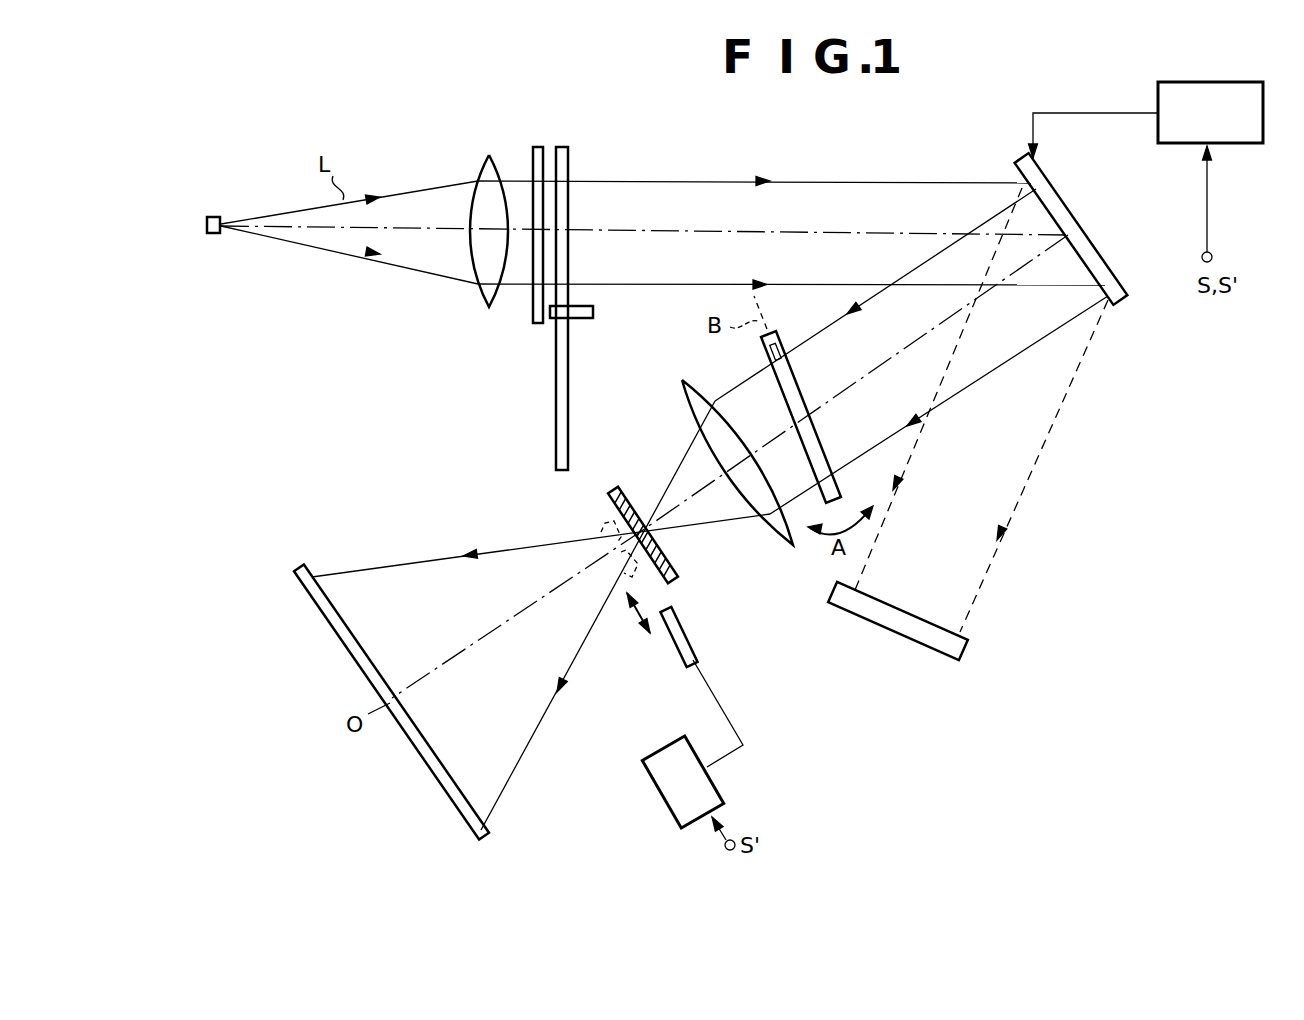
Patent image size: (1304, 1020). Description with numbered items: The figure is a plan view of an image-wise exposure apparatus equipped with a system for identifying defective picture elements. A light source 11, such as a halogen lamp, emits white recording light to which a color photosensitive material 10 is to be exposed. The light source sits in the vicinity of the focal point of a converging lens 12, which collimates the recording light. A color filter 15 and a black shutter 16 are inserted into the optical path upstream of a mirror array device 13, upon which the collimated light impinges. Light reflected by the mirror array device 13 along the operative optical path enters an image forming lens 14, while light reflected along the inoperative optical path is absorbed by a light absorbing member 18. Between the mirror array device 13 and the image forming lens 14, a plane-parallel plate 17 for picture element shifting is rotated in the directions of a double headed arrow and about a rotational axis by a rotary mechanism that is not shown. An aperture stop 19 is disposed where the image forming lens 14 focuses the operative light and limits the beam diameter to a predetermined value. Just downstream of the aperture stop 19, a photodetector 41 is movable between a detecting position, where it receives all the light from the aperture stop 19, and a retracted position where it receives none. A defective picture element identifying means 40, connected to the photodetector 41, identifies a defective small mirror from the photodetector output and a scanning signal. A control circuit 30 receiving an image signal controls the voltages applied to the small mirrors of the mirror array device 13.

The color photosensitive material 10 is at (440, 783).
The light source 11 is at (214, 214).
The converging lens 12 is at (483, 165).
The mirror array device 13 is at (1065, 205).
The image forming lens 14 is at (790, 549).
The color filter 15 is at (567, 148).
The black shutter 16 is at (538, 146).
The plane-parallel plate 17 is at (818, 441).
The light absorbing member 18 is at (968, 656).
The aperture stop 19 is at (675, 583).
The control circuit 30 is at (1157, 97).
The defective picture element identifying means 40 is at (655, 776).
The photodetector 41 is at (677, 648).